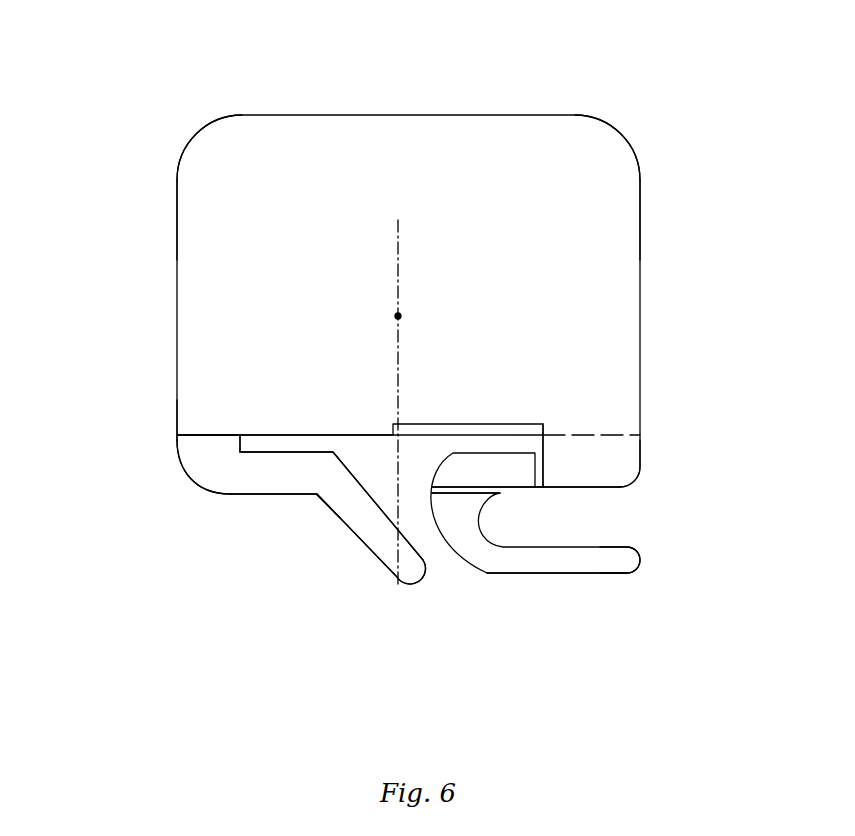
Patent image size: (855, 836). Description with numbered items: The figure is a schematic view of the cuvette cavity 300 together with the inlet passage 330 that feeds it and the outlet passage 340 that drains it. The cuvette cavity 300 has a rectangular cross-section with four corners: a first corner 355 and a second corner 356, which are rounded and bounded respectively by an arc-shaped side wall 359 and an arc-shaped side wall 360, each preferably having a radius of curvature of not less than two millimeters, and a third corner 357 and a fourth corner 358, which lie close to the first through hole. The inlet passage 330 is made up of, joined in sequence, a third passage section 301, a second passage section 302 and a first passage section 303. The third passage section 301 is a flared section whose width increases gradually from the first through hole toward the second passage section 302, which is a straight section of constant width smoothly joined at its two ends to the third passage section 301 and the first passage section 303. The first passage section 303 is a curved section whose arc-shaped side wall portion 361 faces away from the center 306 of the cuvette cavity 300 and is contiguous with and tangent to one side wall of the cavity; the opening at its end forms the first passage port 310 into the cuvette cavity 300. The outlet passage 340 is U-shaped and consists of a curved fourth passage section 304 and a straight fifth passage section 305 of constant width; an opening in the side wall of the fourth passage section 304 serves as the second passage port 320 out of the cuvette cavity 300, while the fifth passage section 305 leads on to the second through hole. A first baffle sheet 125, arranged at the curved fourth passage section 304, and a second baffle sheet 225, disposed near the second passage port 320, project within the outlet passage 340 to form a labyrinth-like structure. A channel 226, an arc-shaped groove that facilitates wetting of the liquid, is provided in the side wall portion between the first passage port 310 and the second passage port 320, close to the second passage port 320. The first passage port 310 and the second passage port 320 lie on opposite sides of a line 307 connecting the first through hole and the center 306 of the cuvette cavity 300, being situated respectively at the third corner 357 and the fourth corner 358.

The cuvette cavity 300 is at (318, 287).
The third passage section 301 is at (385, 535).
The second passage section 302 is at (312, 487).
The first passage section 303 is at (240, 468).
The fourth passage section 304 is at (453, 517).
The fifth passage section 305 is at (608, 572).
The center of the cuvette cavity 306 is at (398, 316).
The line 307 is at (400, 347).
The first passage port 310 is at (213, 435).
The second passage port 320 is at (590, 433).
The inlet passage 330 is at (314, 512).
The outlet passage 340 is at (498, 585).
The first corner 355 is at (203, 163).
The second corner 356 is at (605, 148).
The third corner 357 is at (185, 430).
The fourth corner 358 is at (638, 433).
The arc-shaped side wall 359 is at (200, 135).
The arc-shaped side wall 360 is at (628, 153).
The arc-shaped side wall portion 361 is at (203, 485).
The first baffle sheet 125 is at (475, 490).
The second baffle sheet 225 is at (543, 487).
The channel 226 is at (472, 424).